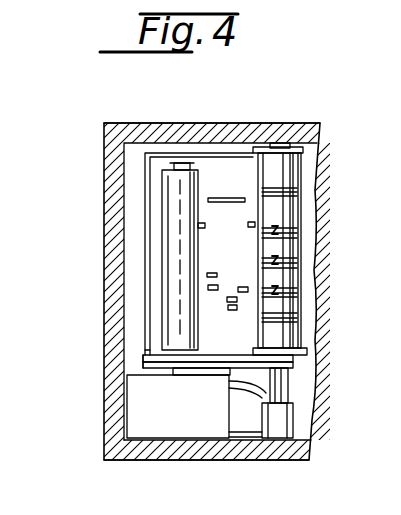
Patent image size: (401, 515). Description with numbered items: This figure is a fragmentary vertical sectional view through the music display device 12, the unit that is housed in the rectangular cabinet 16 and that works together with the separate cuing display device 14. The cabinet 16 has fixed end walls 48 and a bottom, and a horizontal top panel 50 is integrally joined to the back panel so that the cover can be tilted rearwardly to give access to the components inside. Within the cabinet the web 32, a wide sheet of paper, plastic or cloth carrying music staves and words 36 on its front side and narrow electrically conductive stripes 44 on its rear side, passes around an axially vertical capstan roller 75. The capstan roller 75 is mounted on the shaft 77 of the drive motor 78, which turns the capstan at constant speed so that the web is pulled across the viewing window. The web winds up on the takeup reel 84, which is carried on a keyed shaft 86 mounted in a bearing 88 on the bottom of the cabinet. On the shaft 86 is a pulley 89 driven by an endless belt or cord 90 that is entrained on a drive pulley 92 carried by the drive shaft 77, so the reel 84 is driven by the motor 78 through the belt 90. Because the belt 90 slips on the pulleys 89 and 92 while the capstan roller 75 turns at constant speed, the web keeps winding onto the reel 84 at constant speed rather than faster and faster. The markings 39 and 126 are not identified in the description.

The music display device 12 is at (97, 336).
The cuing display device 14 is at (351, 514).
The rectangular cabinet 16 is at (170, 446).
The web 32 is at (147, 262).
The words 36 is at (272, 175).
The indicia bands 39 is at (288, 262).
The electrically conductive stripes 44 is at (222, 198).
The end walls 48 is at (130, 373).
The top panel 50 is at (160, 140).
The capstan roller 75 is at (180, 290).
The shaft 77 is at (128, 362).
The drive motor 78 is at (145, 423).
The reel 84 is at (260, 150).
The keyed shaft 86 is at (288, 374).
The bearing 88 is at (277, 416).
The pulley 89 is at (303, 364).
The endless belt 90 is at (241, 357).
The drive pulley 92 is at (143, 357).
The casing portion 126 is at (272, 509).